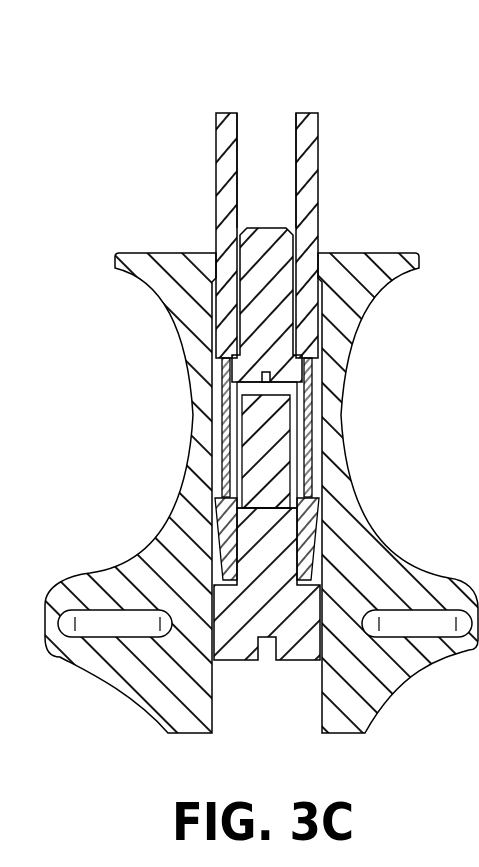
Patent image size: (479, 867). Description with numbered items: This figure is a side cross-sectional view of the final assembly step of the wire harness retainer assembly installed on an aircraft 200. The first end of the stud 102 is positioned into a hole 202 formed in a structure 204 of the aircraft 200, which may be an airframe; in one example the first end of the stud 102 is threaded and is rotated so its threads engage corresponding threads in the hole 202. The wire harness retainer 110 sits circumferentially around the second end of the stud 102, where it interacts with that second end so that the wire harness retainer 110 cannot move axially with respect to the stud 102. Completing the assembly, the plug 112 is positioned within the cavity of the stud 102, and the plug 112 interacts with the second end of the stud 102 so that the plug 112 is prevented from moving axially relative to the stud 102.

The aircraft 200 is at (239, 392).
The hole 202 is at (261, 144).
The structure 204 is at (205, 142).
The stud 102 is at (247, 369).
The wire harness retainer 110 is at (181, 472).
The plug 112 is at (305, 668).